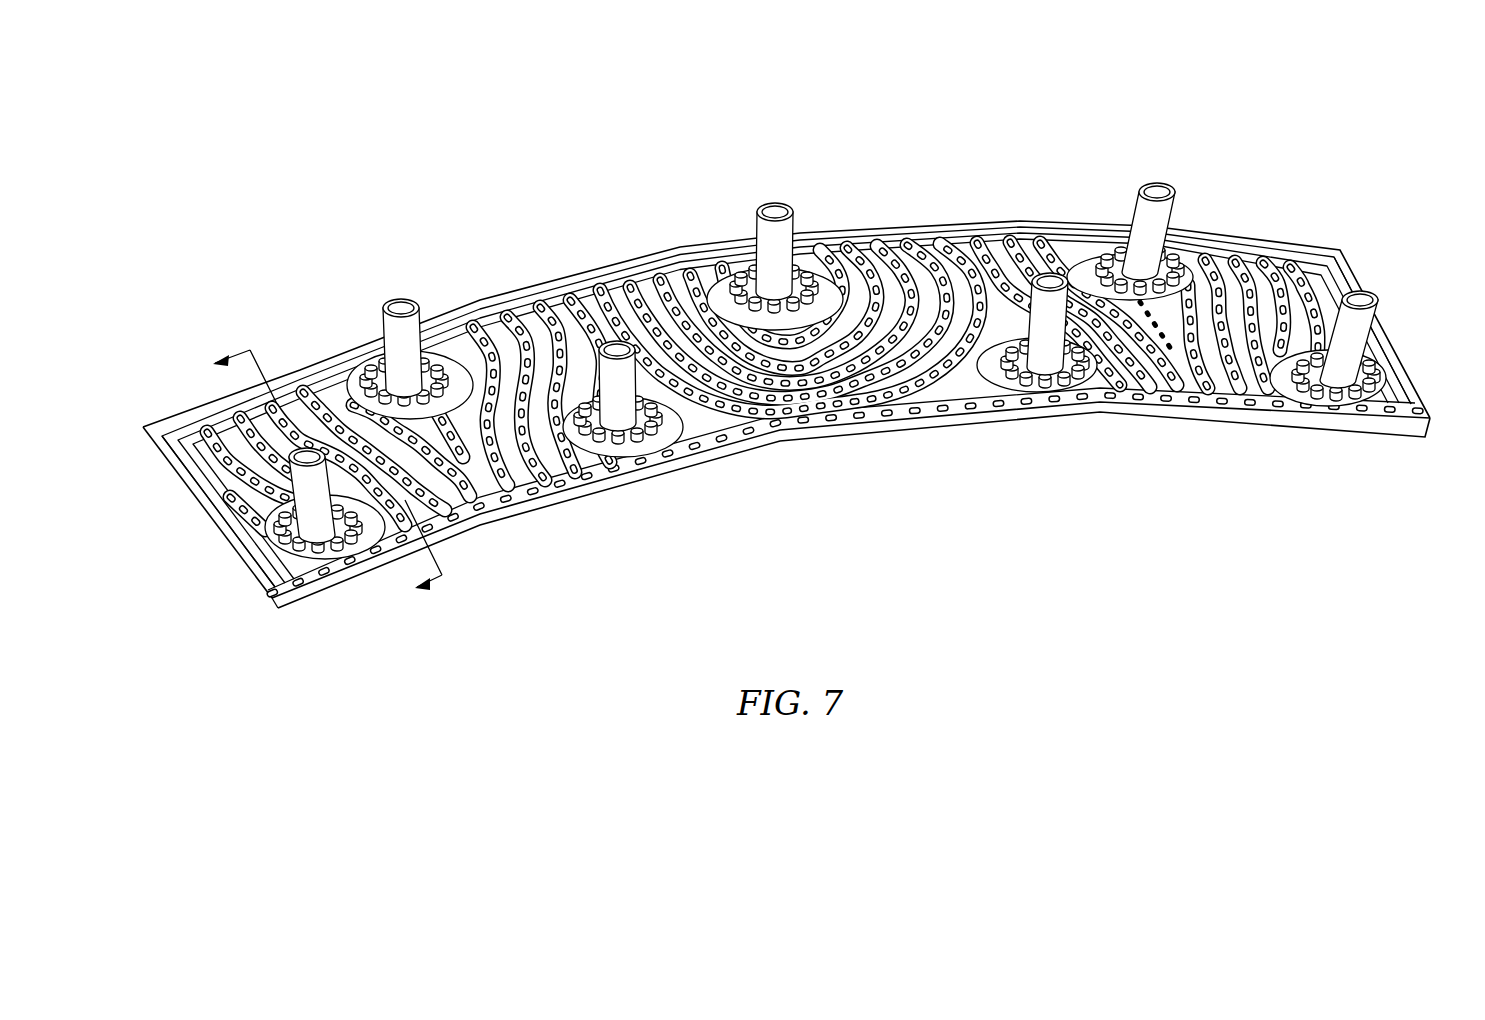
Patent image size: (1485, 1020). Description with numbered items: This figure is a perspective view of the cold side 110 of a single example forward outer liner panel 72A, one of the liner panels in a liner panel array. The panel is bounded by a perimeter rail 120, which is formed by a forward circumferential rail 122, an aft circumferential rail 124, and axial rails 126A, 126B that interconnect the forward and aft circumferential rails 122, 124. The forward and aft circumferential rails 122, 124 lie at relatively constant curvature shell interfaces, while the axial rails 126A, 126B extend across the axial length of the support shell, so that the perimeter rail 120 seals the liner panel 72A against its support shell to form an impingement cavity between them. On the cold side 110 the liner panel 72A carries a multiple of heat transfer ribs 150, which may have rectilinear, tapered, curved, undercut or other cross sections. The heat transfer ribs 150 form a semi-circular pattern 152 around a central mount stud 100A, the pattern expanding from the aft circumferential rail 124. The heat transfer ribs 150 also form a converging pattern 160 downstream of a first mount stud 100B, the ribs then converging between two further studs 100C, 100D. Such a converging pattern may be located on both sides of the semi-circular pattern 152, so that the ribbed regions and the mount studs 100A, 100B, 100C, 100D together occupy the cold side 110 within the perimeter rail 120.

The forward outer liner panel 72A is at (786, 343).
The central mount stud 100A is at (778, 204).
The first mount stud 100B is at (401, 299).
The mount stud 100C is at (320, 510).
The mount stud 100D is at (620, 407).
The cold side 110 is at (960, 383).
The perimeter rail 120 is at (1216, 222).
The forward circumferential rail 122 is at (986, 225).
The aft circumferential rail 124 is at (957, 408).
The axial rail 126A is at (1345, 266).
The axial rail 126B is at (218, 535).
The heat transfer ribs 150 is at (1000, 247).
The semi-circular pattern 152 is at (831, 380).
The converging pattern 160 is at (480, 475).